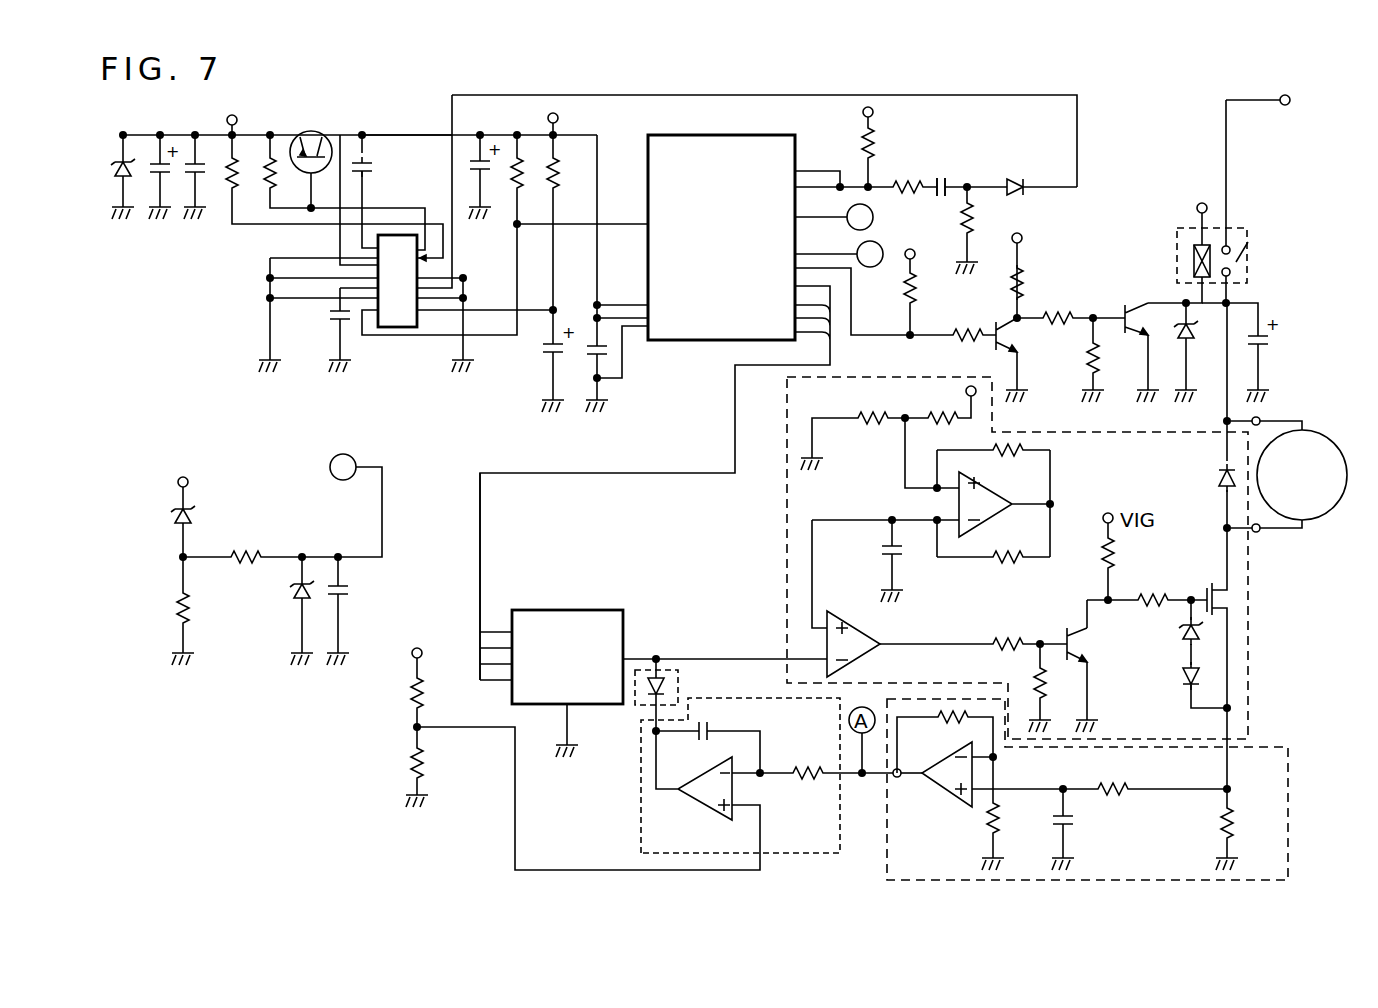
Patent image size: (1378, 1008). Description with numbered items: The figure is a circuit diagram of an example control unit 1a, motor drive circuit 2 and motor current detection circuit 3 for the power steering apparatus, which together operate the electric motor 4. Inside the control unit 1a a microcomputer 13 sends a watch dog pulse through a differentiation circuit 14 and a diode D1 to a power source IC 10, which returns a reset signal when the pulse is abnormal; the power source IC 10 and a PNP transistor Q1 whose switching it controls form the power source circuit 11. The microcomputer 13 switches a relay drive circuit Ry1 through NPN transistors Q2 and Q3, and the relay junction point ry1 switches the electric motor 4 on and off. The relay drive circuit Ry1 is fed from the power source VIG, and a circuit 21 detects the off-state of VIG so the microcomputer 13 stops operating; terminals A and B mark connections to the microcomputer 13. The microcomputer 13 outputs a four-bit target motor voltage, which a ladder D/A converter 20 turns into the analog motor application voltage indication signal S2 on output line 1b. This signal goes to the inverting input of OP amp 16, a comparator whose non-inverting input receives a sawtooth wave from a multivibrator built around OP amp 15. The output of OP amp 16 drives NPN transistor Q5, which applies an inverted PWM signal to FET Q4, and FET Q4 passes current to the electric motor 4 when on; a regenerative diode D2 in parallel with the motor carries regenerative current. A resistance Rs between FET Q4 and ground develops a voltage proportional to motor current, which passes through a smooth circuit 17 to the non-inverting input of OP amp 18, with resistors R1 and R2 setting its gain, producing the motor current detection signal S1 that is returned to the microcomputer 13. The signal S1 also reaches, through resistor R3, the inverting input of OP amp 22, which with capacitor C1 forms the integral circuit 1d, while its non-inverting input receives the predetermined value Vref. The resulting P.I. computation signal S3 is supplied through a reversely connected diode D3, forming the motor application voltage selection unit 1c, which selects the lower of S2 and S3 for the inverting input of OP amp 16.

The control unit 1a is at (704, 80).
The D/A output line 1b is at (471, 604).
The motor application voltage selection unit 1c is at (680, 683).
The integrator section 1d is at (641, 826).
The motor drive circuit 2 is at (1250, 638).
The motor current detection circuit 3 is at (1262, 748).
The electric motor 4 is at (1322, 430).
The power source IC 10 is at (398, 328).
The power source circuit 11 is at (386, 130).
The microcomputer 13 is at (700, 343).
The differentiation circuit 14 is at (952, 164).
The OP amp 15 is at (958, 497).
The OP amp 16 is at (878, 653).
The smooth circuit 17 is at (1081, 773).
The OP amp 18 is at (940, 790).
The D/A converter 20 is at (573, 610).
The circuit for detecting off-state of the power source VIG 21 is at (247, 545).
The OP amp 22 is at (708, 812).
The PNP transistor Q1 is at (302, 138).
The NPN transistor Q2 is at (1005, 320).
The NPN transistor Q3 is at (1136, 300).
The FET Q4 is at (1210, 585).
The NPN transistor Q5 is at (1088, 648).
The diode D1 is at (1018, 176).
The regenerative diode D2 is at (1213, 480).
The diode D3 is at (658, 686).
The relay drive circuit Ry1 is at (1194, 260).
The relay junction point ry1 is at (1240, 262).
The resistor R1 is at (1003, 815).
The resistor R2 is at (957, 733).
The resistor R3 is at (806, 787).
The resistance Rs is at (1238, 810).
The capacitor C1 is at (694, 742).
The motor current detection signal S1 is at (868, 787).
The motor application voltage indication signal S2 is at (644, 658).
The P.I. computation signal S3 is at (652, 708).
The power source VIG is at (255, 122).
The predetermined value Vref is at (454, 727).
The terminal A is at (870, 254).
The terminal B is at (860, 217).